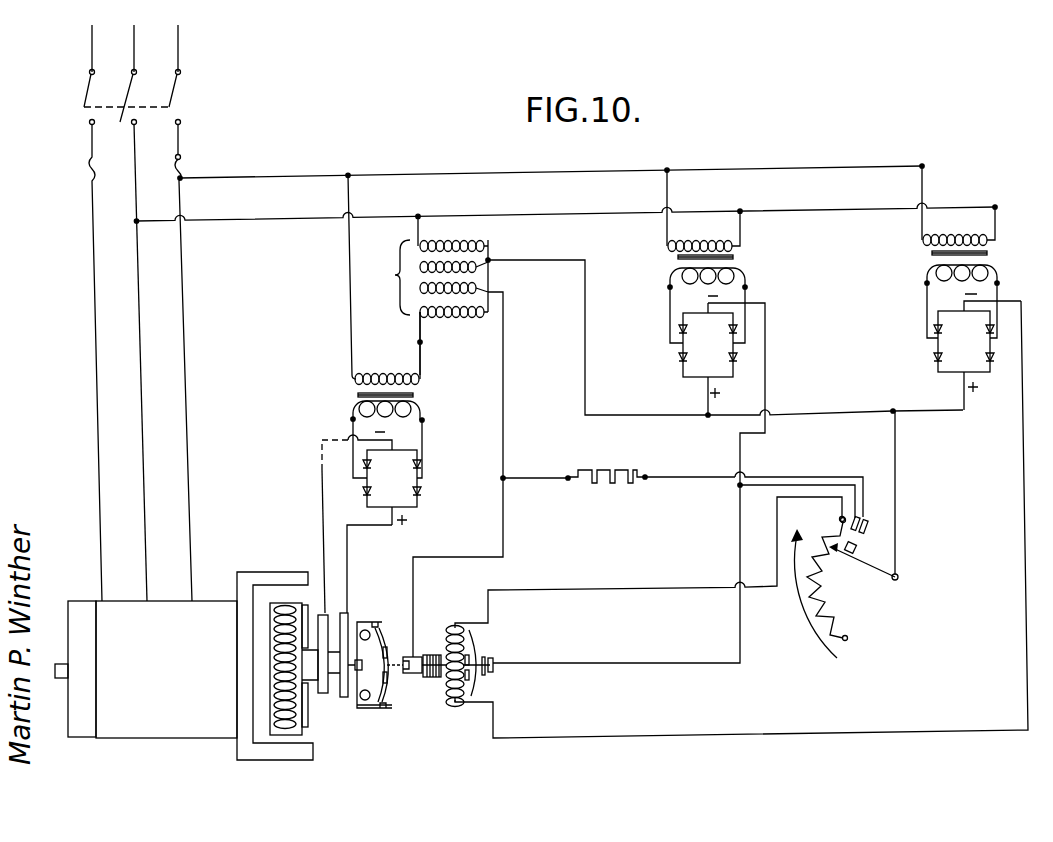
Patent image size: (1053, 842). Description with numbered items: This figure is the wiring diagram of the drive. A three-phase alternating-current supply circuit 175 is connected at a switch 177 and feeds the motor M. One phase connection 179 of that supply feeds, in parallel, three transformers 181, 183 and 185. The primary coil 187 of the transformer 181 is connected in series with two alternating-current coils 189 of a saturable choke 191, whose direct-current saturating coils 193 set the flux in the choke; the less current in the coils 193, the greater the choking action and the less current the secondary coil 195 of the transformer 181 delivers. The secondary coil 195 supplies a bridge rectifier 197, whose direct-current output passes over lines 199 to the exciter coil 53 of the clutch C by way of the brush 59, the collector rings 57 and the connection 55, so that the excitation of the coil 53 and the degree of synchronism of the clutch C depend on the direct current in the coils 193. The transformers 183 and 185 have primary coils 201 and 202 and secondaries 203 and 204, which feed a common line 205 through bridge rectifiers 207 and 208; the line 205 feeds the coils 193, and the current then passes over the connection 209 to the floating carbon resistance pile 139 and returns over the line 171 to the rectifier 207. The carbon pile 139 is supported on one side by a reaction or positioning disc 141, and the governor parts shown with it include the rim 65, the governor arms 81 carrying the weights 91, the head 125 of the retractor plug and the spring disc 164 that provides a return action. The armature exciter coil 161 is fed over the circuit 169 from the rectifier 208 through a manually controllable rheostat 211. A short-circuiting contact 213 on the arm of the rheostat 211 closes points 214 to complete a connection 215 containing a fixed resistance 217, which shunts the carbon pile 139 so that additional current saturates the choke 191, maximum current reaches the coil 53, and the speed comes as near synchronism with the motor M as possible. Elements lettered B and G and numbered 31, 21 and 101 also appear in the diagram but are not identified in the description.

The three-phase A. C. supply circuit 175 is at (178, 48).
The switch 177 is at (186, 87).
The phase connection 179 is at (285, 218).
The saturable choke 191 is at (453, 295).
The A. C. coils 189 is at (482, 242).
The D. C. saturating coils 193 is at (476, 270).
The connection 209 is at (505, 316).
The transformer 183 is at (705, 293).
The primary coil 201 is at (717, 234).
The secondary coil 203 is at (668, 284).
The bridge rectifier 207 is at (698, 350).
The line 171 is at (767, 358).
The common line 205 is at (585, 344).
The transformer 185 is at (954, 288).
The primary coil 202 is at (976, 230).
The secondary coil 204 is at (926, 280).
The bridge rectifier 208 is at (955, 343).
The circuit 169 is at (567, 587).
The resistance 217 is at (615, 470).
The connection 215 is at (808, 470).
The points 214 is at (860, 528).
The short-circuiting contact 213 is at (856, 547).
The rheostat 211 is at (835, 590).
The transformer 181 is at (393, 394).
The primary coil 187 is at (418, 382).
The secondary coil 195 is at (351, 414).
The bridge rectifier 197 is at (413, 447).
The lines 199 is at (348, 549).
The brake B is at (80, 598).
The terminal 31 is at (72, 650).
The motor M is at (167, 680).
The clutch C is at (290, 566).
The exciter coil 53 is at (290, 727).
The armature plate 21 is at (307, 734).
The connection 55 is at (306, 620).
The brush 59 is at (344, 627).
The governor weights 91 is at (368, 633).
The collector rings 57 is at (346, 698).
The governor arms 81 is at (384, 703).
The rim 65 is at (383, 710).
The commutator 101 is at (403, 674).
The head 125 is at (400, 654).
The generator G is at (427, 703).
The carbon resistance pile 139 is at (421, 656).
The positioning disc 141 is at (440, 692).
The armature exciter coil 161 is at (457, 704).
The spring disc 164 is at (475, 647).